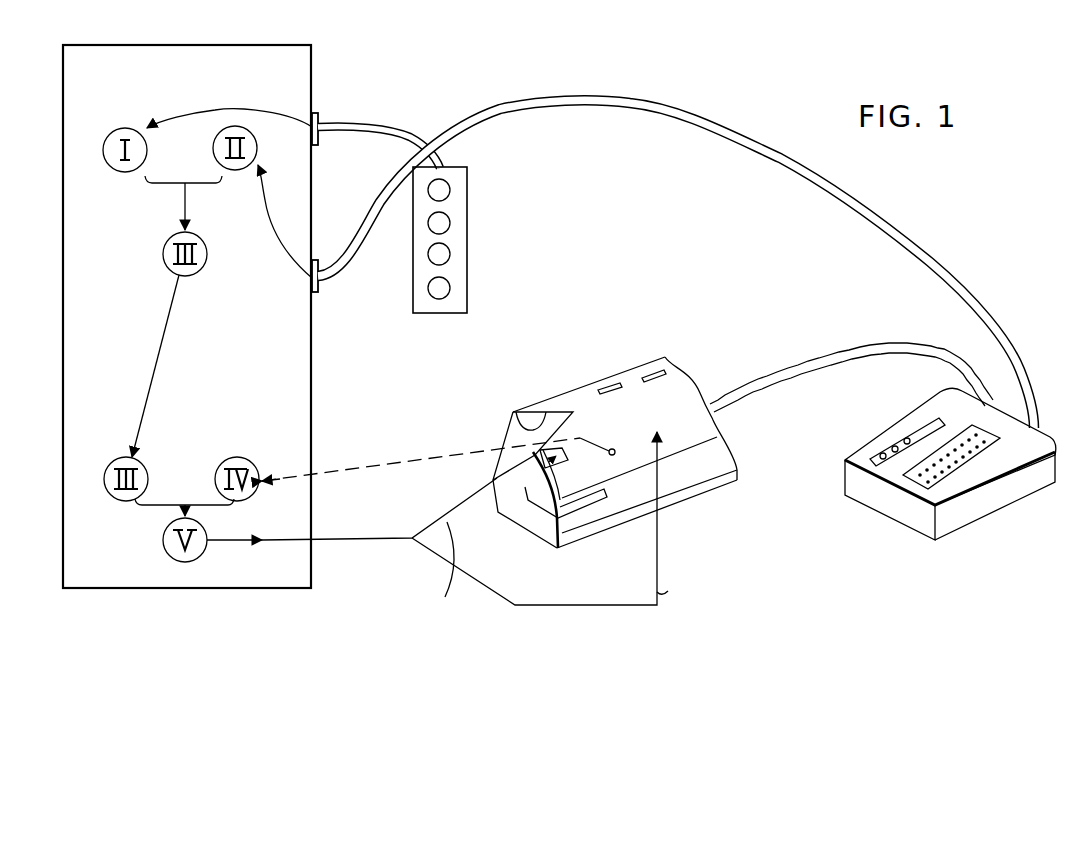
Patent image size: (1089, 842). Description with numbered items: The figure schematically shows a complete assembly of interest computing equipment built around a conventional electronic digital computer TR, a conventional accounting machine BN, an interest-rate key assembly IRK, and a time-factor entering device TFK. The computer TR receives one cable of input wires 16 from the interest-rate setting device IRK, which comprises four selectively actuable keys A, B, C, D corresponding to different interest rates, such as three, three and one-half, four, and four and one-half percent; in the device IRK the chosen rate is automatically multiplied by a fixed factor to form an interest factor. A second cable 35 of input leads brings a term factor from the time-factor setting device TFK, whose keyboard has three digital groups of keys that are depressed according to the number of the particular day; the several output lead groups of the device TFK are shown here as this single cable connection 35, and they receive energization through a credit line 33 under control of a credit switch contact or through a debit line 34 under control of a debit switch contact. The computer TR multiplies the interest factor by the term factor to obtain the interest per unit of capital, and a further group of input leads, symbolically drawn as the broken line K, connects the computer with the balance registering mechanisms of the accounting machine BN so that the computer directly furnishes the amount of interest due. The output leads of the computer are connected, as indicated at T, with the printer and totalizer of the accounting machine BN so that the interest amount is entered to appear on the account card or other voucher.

The cable of input wires 16 is at (360, 120).
The second cable of input leads 35 is at (872, 221).
The credit line 33 is at (816, 358).
The debit line 34 is at (797, 373).
The electronic digital computer TR is at (112, 586).
The interest-rate key assembly IRK is at (449, 240).
The accounting machine BN is at (686, 378).
The time-factor entering device TFK is at (998, 505).
The group of input leads K is at (438, 459).
The output connection to printer and totalizer T is at (387, 537).
The key D is at (428, 191).
The key C is at (428, 224).
The key B is at (428, 255).
The key A is at (428, 289).